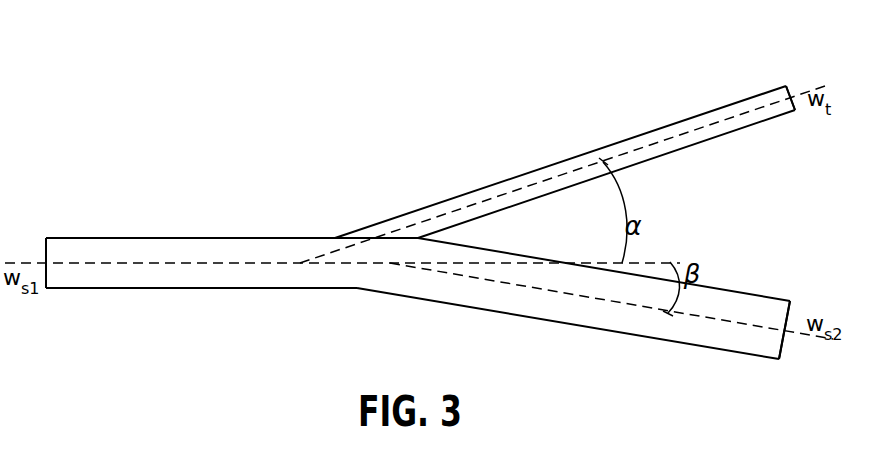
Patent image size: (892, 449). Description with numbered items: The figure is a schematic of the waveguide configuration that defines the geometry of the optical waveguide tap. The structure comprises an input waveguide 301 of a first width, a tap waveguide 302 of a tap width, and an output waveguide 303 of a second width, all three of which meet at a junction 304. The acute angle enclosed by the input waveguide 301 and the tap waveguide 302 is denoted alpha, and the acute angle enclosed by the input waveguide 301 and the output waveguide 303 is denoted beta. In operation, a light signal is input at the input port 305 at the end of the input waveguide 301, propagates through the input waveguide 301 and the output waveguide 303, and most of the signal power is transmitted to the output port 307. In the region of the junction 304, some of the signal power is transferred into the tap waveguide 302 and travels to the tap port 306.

The input waveguide 301 is at (235, 238).
The tap waveguide 302 is at (530, 170).
The output waveguide 303 is at (595, 328).
The junction 304 is at (332, 263).
The input port 305 is at (46, 257).
The tap port 306 is at (794, 88).
The output port 307 is at (784, 350).